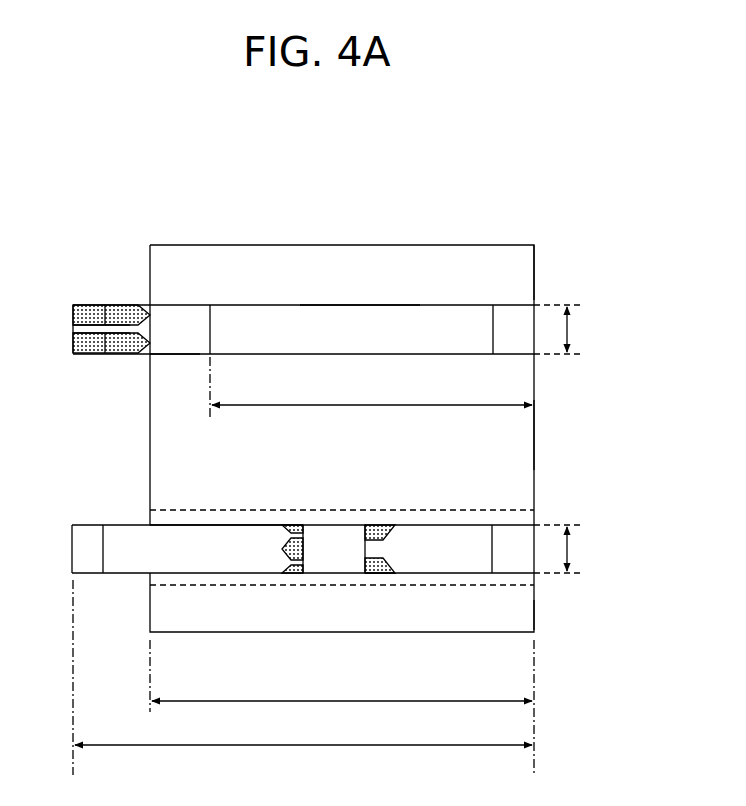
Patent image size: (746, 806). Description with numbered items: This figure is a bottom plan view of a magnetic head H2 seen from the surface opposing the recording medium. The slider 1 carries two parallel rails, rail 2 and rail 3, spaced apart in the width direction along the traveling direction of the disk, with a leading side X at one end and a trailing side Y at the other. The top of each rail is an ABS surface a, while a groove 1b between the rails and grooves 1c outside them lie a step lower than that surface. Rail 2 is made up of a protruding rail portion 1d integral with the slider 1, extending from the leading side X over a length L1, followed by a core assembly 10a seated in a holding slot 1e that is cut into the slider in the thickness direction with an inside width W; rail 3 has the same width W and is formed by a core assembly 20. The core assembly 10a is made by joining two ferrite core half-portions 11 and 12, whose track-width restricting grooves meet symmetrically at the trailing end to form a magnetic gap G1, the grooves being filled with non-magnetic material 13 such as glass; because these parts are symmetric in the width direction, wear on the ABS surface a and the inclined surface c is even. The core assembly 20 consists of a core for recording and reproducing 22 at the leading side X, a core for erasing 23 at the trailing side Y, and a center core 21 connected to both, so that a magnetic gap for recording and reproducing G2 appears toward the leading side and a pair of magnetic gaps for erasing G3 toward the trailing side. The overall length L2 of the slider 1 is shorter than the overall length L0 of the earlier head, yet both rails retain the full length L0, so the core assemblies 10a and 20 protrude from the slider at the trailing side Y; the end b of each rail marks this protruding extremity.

The slider 1 is at (306, 243).
The groove 1b is at (536, 435).
The groove 1c is at (517, 287).
The protruding rail portion 1d is at (355, 327).
The holding slot 1e is at (210, 325).
The rail 2 is at (449, 304).
The rail 3 is at (470, 590).
The core assembly 10a is at (134, 302).
The core half-portion 11 is at (162, 343).
The core half-portion 12 is at (86, 324).
The non-magnetic material 13 is at (90, 306).
The core assembly 20 is at (377, 589).
The center core 21 is at (330, 555).
The core for recording and reproducing 22 is at (425, 558).
The core for erasing 23 is at (192, 565).
The magnetic gap G1 is at (131, 330).
The magnetic gap for recording and reproducing G2 is at (364, 546).
The magnetic gaps for erasing G3 is at (300, 556).
The magnetic head H2 is at (542, 248).
The ABS surface a is at (372, 340).
The end b is at (512, 345).
The inclined surface c is at (73, 312).
The width W is at (582, 439).
The overall length L0 is at (303, 679).
The length L1 is at (371, 395).
The overall length L2 is at (341, 686).
The leading side X is at (540, 481).
The trailing side Y is at (146, 470).